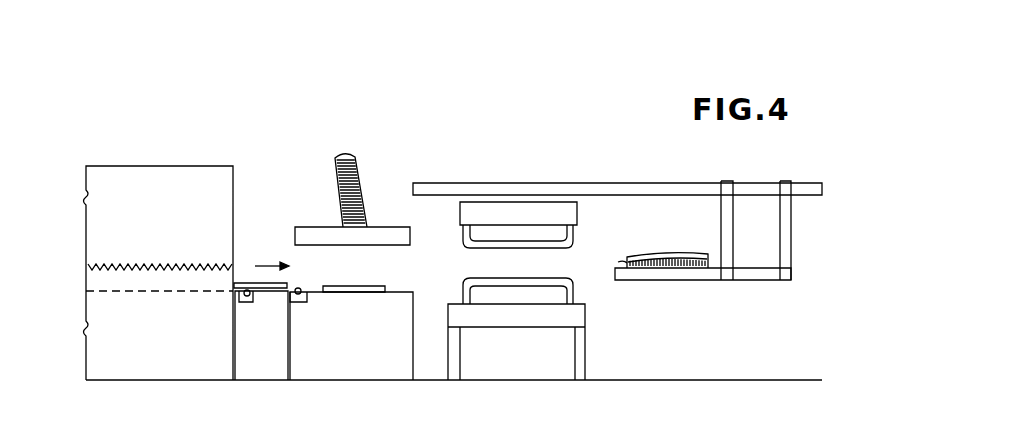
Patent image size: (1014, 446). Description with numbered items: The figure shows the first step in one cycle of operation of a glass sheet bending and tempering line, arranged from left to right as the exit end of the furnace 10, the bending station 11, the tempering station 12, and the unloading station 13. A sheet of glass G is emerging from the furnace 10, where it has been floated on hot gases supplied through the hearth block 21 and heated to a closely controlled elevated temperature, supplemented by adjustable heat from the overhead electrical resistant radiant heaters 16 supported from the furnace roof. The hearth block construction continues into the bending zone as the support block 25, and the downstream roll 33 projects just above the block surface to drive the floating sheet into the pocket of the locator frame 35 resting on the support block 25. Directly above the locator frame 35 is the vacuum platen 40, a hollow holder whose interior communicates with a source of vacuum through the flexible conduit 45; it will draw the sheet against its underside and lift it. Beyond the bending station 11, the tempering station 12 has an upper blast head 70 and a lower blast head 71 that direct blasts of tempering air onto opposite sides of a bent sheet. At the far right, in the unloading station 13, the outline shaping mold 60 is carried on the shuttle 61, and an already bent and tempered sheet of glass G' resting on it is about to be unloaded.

The furnace 10 is at (173, 166).
The electrical resistant radiant heaters 16 is at (163, 266).
The hearth block 21 is at (113, 291).
The support block 25 is at (407, 292).
The downstream roll 33 is at (300, 288).
The locator frame 35 is at (378, 286).
The vacuum platen 40 is at (322, 227).
The flexible conduit 45 is at (360, 168).
The bending station 11 is at (342, 136).
The tempering station 12 is at (510, 172).
The unloading station 13 is at (649, 167).
The upper blast head 70 is at (594, 229).
The lower blast head 71 is at (603, 296).
The shuttle 61 is at (708, 281).
The outline shaping mold 60 is at (618, 262).
The sheet of glass G is at (261, 261).
The bent and tempered sheet of glass G' is at (667, 247).